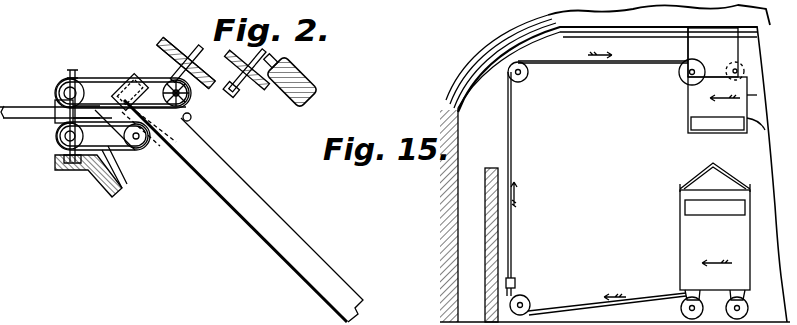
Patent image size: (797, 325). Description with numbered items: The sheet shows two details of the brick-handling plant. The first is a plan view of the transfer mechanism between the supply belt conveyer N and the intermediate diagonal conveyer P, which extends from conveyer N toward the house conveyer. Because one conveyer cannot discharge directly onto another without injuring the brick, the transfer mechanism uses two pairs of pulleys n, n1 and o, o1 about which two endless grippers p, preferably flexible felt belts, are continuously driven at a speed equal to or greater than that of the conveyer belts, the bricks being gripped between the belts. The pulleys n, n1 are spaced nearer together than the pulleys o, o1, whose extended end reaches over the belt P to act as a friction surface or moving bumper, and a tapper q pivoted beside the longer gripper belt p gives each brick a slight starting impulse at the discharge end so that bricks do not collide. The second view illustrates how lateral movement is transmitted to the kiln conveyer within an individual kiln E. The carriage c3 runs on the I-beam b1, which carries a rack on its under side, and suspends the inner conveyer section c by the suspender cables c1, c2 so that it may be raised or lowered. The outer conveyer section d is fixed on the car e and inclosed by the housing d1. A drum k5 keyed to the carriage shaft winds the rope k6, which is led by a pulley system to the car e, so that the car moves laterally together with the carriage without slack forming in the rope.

In FIG. 2, the belt conveyer N is at (36, 120).
In FIG. 2, the pulley n is at (70, 150).
In FIG. 2, the pulley n1 is at (148, 148).
In FIG. 2, the pulley o is at (80, 78).
In FIG. 2, the pulley o1 is at (166, 82).
In FIG. 2, the endless gripper p is at (100, 78).
In FIG. 2, the tapper q is at (192, 121).
In FIG. 2, the diagonal conveyer P is at (306, 254).
In FIG. 15, the individual kiln E is at (480, 82).
In FIG. 15, the rope or cable k6 is at (573, 302).
In FIG. 15, the drum k5 is at (680, 76).
In FIG. 15, the I-beam b1 is at (668, 32).
In FIG. 15, the carriage c3 is at (713, 52).
In FIG. 15, the suspender cable c2 is at (686, 100).
In FIG. 15, the suspender cable c1 is at (757, 97).
In FIG. 15, the conveyer section c is at (760, 124).
In FIG. 15, the housing d1 is at (700, 175).
In FIG. 15, the conveyer section d is at (687, 208).
In FIG. 15, the car e is at (703, 238).